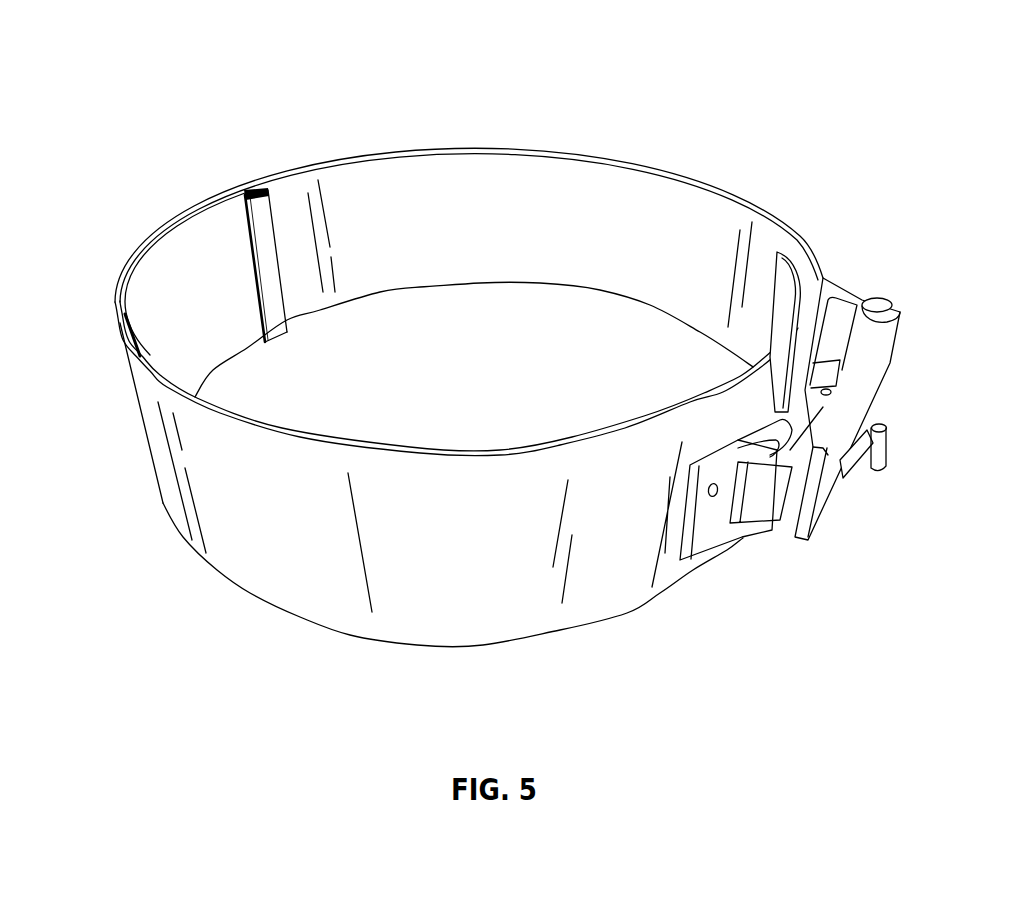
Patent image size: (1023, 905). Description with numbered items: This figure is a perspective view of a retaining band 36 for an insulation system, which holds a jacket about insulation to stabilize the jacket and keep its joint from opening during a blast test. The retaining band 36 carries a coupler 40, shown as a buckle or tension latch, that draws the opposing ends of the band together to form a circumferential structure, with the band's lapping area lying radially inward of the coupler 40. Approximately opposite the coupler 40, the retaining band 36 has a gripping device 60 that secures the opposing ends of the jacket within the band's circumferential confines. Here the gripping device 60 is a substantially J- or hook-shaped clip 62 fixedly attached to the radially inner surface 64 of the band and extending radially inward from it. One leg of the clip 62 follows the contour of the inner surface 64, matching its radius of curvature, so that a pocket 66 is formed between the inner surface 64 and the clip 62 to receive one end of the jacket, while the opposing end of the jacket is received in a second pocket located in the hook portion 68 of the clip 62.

The retaining band 36 is at (237, 102).
The coupler 40 is at (867, 400).
The gripping device 60 is at (178, 312).
The clip 62 is at (227, 332).
The radially inner surface 64 is at (499, 242).
The pocket 66 is at (207, 203).
The hook portion 68 is at (262, 253).